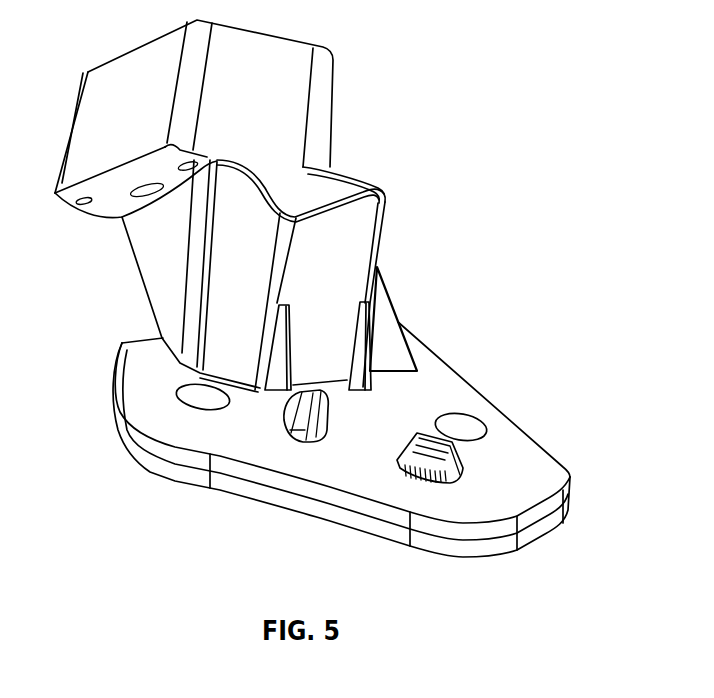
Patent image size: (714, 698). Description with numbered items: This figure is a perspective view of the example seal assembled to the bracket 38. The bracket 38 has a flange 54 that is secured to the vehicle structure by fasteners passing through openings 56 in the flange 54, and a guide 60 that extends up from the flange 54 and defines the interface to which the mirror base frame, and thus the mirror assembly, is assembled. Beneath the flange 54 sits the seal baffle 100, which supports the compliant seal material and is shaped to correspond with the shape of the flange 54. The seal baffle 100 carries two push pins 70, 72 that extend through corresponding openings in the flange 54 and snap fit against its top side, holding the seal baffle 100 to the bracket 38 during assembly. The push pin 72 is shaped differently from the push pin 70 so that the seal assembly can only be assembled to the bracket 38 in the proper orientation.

The bracket 38 is at (436, 223).
The flange 54 is at (433, 387).
The openings 56 is at (188, 400).
The guide 60 is at (295, 115).
The push pin 70 is at (460, 478).
The push pin 72 is at (280, 432).
The seal baffle 100 is at (263, 498).